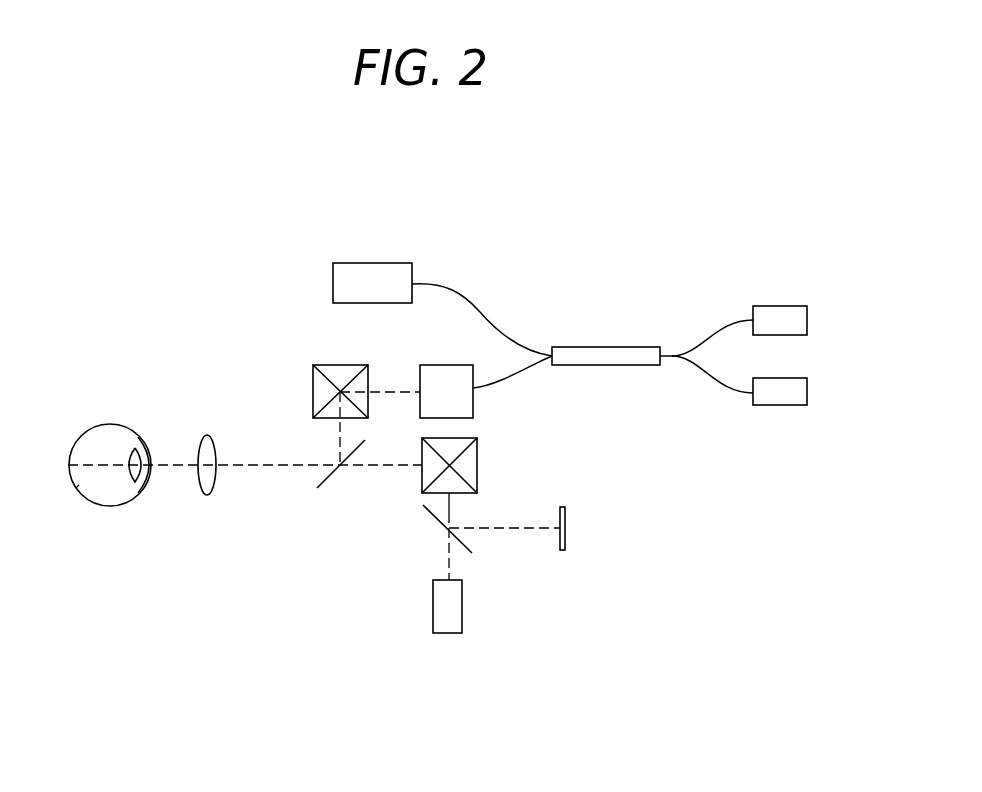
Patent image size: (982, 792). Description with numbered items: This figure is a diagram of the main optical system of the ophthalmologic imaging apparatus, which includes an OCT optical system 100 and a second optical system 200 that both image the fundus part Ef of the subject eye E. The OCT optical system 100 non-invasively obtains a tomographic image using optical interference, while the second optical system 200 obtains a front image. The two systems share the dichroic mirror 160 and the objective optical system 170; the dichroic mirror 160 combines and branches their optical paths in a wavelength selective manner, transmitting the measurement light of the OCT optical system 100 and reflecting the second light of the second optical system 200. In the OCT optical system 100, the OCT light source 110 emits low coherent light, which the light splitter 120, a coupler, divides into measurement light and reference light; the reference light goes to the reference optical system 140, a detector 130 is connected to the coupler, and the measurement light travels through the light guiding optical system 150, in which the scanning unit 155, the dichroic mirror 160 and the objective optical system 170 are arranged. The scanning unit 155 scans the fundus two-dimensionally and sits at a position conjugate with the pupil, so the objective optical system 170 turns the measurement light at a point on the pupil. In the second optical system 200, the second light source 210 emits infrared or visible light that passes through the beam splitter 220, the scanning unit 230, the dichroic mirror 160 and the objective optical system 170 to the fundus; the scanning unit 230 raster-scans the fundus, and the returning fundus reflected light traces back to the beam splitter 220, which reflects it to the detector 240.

The subject eye E is at (75, 407).
The fundus part Ef is at (77, 489).
The OCT optical system 100 is at (685, 284).
The OCT light source 110 is at (765, 393).
The light splitter 120 is at (587, 357).
The detector 130 is at (767, 312).
The reference optical system 140 is at (333, 272).
The light guiding optical system 150 is at (265, 424).
The scanning unit 155 is at (313, 380).
The dichroic mirror 160 is at (328, 477).
The objective optical system 170 is at (216, 478).
The second optical system 200 is at (588, 634).
The second light source 210 is at (462, 615).
The beam splitter 220 is at (435, 518).
The scanning unit 230 is at (478, 442).
The detector 240 is at (566, 538).